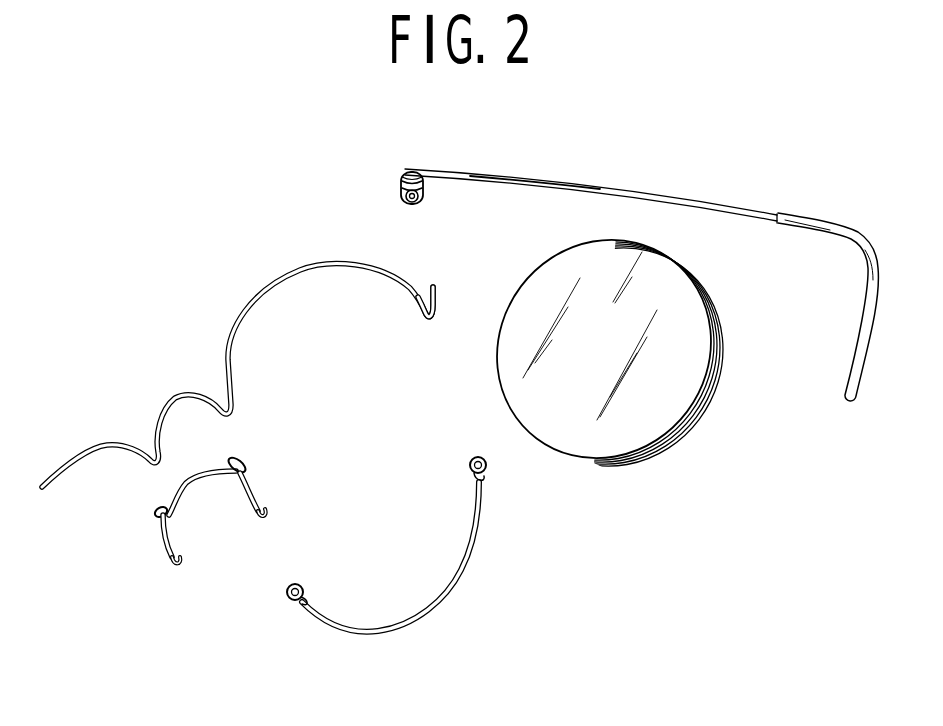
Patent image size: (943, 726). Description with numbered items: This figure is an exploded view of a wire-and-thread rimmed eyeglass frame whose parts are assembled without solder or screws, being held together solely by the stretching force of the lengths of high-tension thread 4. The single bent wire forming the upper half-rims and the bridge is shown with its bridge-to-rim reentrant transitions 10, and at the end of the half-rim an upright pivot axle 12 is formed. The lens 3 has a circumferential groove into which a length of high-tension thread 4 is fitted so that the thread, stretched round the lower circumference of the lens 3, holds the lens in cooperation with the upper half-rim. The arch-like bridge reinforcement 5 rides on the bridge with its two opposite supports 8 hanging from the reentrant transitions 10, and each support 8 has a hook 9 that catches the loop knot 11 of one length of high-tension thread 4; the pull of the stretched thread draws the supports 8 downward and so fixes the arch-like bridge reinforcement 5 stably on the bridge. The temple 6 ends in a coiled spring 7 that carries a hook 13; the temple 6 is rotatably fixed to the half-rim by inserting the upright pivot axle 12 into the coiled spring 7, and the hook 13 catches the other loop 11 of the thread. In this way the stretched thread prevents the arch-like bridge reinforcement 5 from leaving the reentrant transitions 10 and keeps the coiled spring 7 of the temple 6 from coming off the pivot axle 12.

The lens 3 is at (660, 380).
The high-tension thread 4 is at (401, 562).
The arch-like bridge reinforcement 5 is at (214, 538).
The temple 6 is at (580, 187).
The coiled spring 7 is at (400, 183).
The support 8 is at (163, 542).
The hook 9 is at (175, 568).
The bridge-to-rim reentrant transition 10 is at (264, 375).
The loop knot 11 is at (490, 468).
The upright pivot axle 12 is at (438, 291).
The hook 13 is at (416, 203).